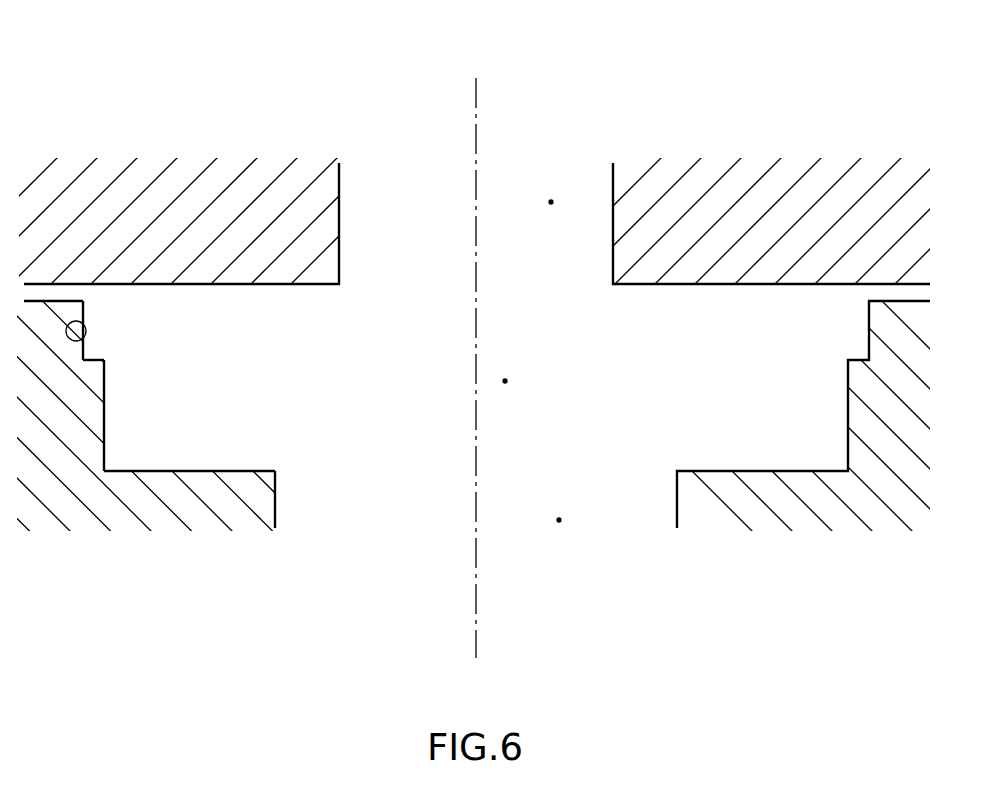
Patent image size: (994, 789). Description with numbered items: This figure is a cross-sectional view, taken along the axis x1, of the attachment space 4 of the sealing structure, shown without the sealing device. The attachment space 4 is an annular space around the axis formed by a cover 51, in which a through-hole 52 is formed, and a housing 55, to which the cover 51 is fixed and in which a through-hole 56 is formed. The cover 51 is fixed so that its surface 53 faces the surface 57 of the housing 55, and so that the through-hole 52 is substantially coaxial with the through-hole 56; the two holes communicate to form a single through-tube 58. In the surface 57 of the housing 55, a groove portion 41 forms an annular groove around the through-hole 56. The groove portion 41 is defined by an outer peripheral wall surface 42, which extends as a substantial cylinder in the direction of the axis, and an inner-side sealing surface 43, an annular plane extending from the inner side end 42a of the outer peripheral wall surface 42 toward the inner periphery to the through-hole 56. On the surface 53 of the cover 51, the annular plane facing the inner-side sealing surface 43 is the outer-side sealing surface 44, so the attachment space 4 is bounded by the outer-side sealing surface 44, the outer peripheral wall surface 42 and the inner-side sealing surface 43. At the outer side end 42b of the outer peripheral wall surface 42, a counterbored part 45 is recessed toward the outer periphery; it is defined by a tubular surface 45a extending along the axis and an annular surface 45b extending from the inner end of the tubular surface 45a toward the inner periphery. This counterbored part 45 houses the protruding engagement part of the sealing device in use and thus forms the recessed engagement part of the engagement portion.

The attachment space 4 is at (497, 394).
The groove portion 41 is at (154, 469).
The outer peripheral wall surface 42 is at (120, 450).
The inner side end 42a is at (106, 433).
The outer side end 42b is at (69, 339).
The inner-side sealing surface 43 is at (497, 453).
The outer-side sealing surface 44 is at (312, 286).
The counterbored part 45 is at (152, 326).
The tubular surface 45a is at (84, 304).
The annular surface 45b is at (85, 356).
The cover 51 is at (497, 394).
The through-hole 52 is at (551, 202).
The surface 53 is at (796, 288).
The housing 55 is at (497, 389).
The through-hole 56 is at (560, 521).
The surface 57 is at (900, 302).
The through-tube 58 is at (507, 381).
The central axis x1 is at (478, 97).